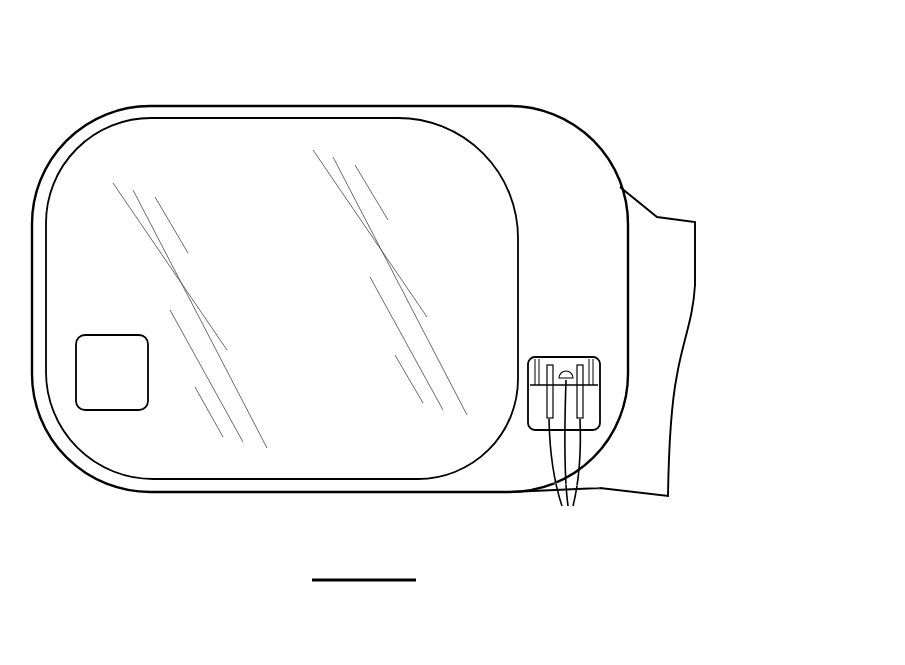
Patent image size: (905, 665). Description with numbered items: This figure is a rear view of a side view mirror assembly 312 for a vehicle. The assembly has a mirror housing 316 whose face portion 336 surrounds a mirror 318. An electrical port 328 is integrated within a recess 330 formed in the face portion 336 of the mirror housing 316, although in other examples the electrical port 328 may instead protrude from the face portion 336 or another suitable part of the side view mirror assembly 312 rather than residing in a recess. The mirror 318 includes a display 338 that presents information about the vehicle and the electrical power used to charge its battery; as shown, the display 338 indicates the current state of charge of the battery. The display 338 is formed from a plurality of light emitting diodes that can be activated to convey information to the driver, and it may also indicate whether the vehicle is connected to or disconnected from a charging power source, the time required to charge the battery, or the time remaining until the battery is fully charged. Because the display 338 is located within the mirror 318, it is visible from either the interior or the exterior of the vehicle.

The side view mirror assembly 312 is at (492, 41).
The mirror housing 316 is at (594, 141).
The mirror 318 is at (518, 248).
The electrical port 328 is at (565, 459).
The recess 330 is at (550, 357).
The face portion 336 is at (497, 474).
The display 338 is at (110, 410).